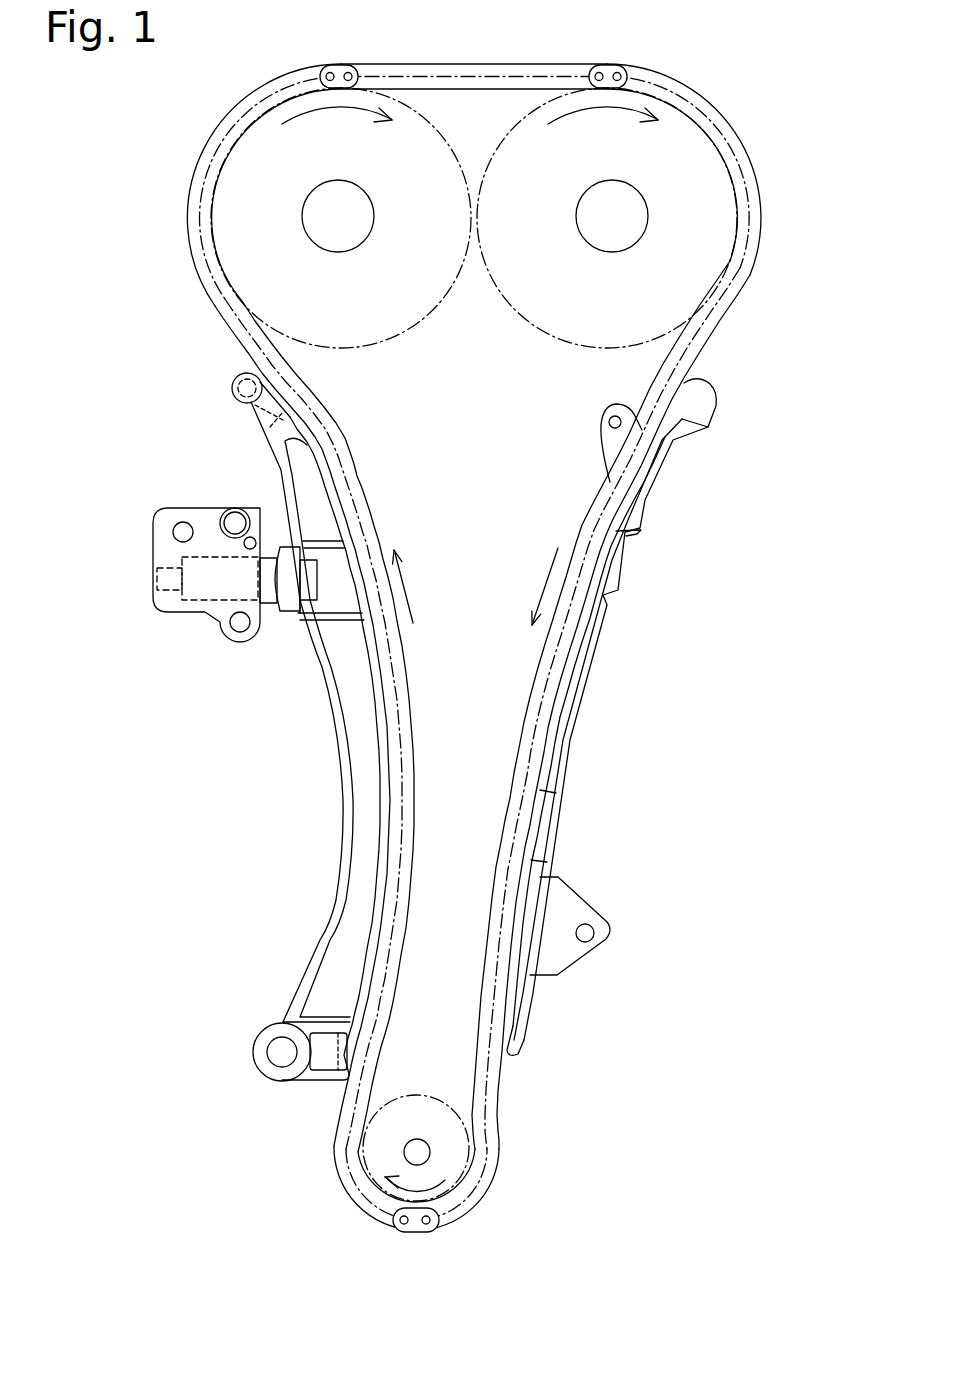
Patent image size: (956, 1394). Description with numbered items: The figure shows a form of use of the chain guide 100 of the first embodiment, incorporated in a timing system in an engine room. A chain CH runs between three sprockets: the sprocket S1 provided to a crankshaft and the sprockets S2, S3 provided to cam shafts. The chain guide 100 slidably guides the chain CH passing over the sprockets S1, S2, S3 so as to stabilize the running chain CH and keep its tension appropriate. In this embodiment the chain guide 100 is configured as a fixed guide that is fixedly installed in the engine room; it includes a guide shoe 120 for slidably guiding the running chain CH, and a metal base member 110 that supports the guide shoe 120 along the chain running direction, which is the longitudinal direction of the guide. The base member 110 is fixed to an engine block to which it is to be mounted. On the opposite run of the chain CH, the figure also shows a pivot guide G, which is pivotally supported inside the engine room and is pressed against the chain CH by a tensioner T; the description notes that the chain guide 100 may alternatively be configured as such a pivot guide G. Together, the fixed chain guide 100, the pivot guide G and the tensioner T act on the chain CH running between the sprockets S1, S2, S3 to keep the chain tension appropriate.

The chain CH is at (688, 352).
The sprocket S1 is at (450, 1155).
The sprocket S2 is at (243, 207).
The sprocket S3 is at (685, 197).
The pivot guide G is at (347, 925).
The tensioner T is at (168, 558).
The chain guide 100 is at (613, 717).
The base member 110 is at (600, 638).
The guide shoe 120 is at (603, 589).